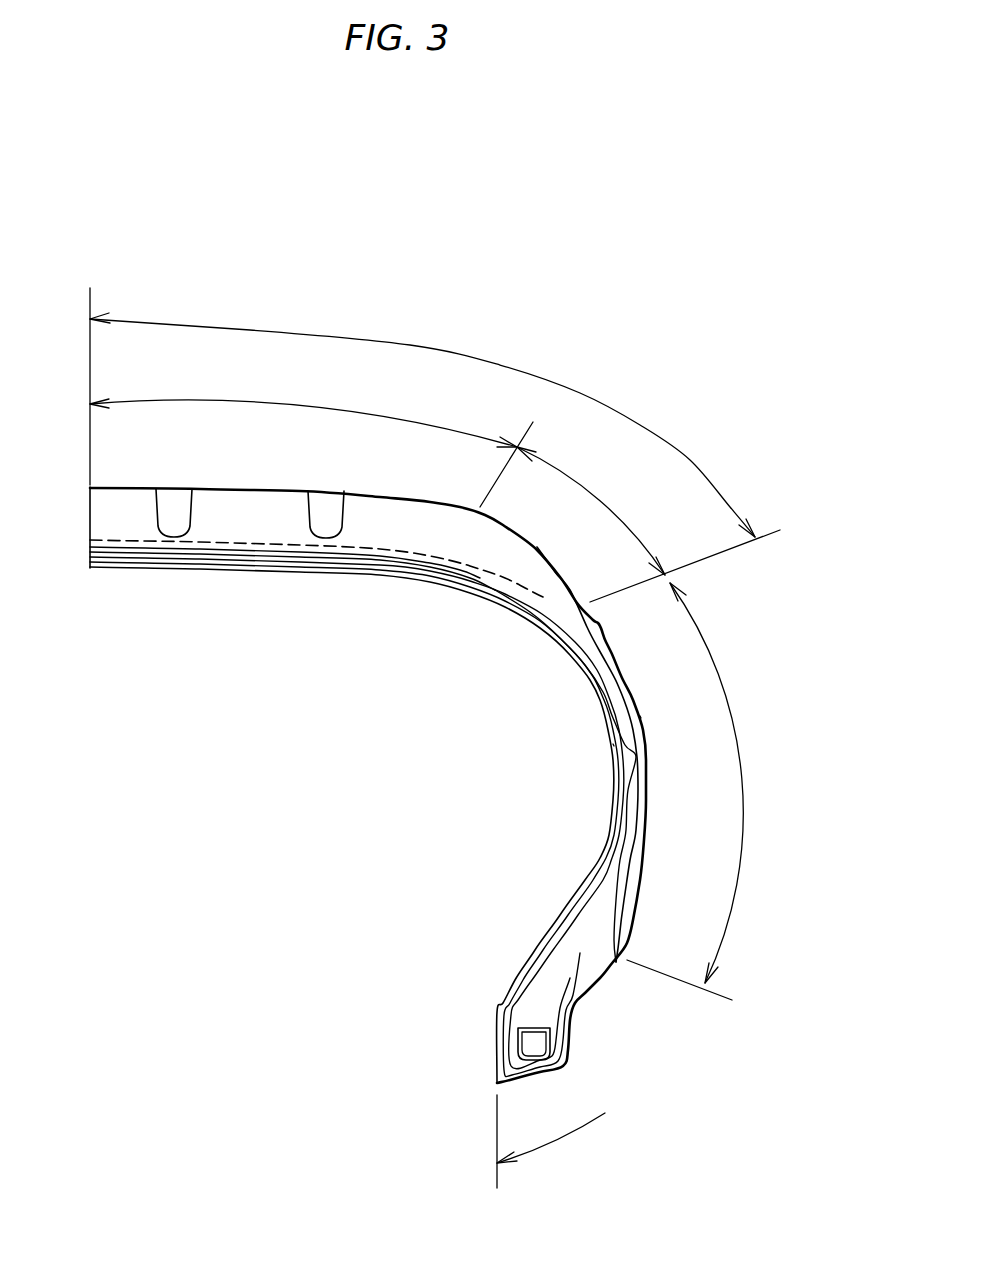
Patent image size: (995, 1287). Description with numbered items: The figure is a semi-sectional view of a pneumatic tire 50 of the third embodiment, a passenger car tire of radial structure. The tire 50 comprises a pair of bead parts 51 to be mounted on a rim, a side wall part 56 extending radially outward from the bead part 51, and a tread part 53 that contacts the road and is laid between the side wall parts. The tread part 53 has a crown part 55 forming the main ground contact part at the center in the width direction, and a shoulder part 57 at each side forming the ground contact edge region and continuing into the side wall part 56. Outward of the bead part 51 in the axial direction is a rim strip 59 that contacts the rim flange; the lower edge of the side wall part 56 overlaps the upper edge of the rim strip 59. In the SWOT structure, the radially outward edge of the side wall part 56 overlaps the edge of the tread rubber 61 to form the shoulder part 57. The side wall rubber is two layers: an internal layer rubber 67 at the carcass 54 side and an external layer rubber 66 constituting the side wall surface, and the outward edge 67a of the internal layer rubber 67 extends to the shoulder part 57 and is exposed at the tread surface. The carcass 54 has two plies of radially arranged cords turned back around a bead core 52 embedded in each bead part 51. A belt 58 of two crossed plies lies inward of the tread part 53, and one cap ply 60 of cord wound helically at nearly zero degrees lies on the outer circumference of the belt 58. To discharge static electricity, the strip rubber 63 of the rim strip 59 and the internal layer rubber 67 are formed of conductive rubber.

The pneumatic tire 50 is at (573, 209).
The bead part 51 is at (574, 1133).
The bead core 52 is at (532, 1043).
The tread part 53 is at (435, 457).
The carcass 54 is at (613, 745).
The crown part 55 is at (311, 446).
The side wall part 56 is at (716, 783).
The shoulder part 57 is at (591, 511).
The belt 58 is at (268, 554).
The rim strip 59 is at (590, 993).
The cap ply 60 is at (398, 546).
The tread rubber 61 is at (237, 508).
The strip rubber 63 is at (607, 972).
The external layer rubber 66 is at (640, 717).
The internal layer rubber 67 is at (613, 688).
The outward edge of internal layer rubber 67a is at (537, 549).